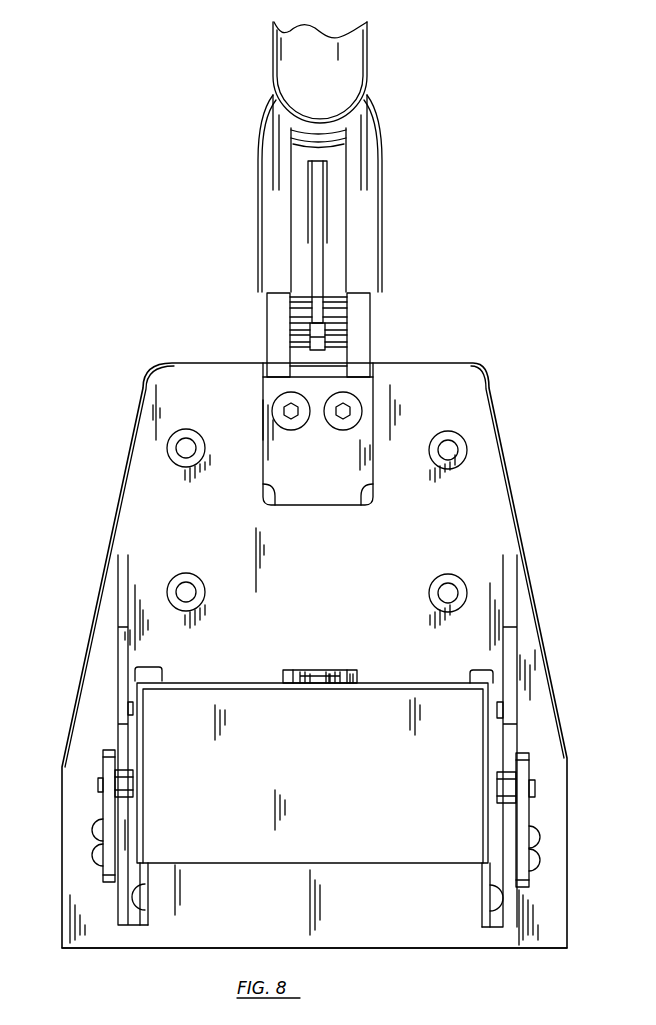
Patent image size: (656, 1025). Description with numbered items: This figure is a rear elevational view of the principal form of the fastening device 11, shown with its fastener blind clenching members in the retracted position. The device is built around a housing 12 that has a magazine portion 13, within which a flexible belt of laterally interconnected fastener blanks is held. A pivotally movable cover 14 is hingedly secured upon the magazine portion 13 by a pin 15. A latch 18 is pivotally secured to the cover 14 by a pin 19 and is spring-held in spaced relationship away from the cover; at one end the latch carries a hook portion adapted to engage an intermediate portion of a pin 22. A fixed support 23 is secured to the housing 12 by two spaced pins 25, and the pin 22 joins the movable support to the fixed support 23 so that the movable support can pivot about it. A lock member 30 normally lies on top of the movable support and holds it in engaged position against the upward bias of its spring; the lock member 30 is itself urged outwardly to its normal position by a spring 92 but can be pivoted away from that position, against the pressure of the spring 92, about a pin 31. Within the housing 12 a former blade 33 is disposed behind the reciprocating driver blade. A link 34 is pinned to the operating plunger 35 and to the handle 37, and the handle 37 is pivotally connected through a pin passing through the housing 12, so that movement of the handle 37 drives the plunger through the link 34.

The fastening device 11 is at (452, 329).
The housing 12 is at (487, 520).
The magazine portion 13 is at (467, 938).
The cover 14 is at (345, 741).
The pin 15 is at (137, 895).
The latch 18 is at (150, 672).
The pin 19 is at (128, 712).
The pin 22 is at (122, 782).
The fixed support 23 is at (110, 803).
The pins 25 is at (95, 855).
The lock member 30 is at (318, 676).
The pin 31 is at (351, 681).
The former blade 33 is at (357, 468).
The link 34 is at (318, 215).
The operating plunger 35 is at (275, 318).
The handle 37 is at (345, 67).
The spring 92 is at (333, 677).